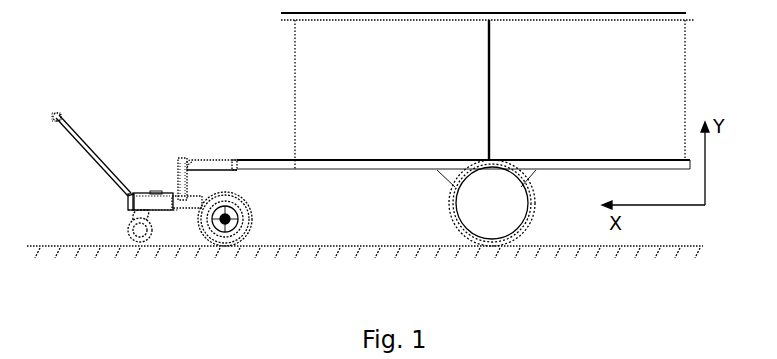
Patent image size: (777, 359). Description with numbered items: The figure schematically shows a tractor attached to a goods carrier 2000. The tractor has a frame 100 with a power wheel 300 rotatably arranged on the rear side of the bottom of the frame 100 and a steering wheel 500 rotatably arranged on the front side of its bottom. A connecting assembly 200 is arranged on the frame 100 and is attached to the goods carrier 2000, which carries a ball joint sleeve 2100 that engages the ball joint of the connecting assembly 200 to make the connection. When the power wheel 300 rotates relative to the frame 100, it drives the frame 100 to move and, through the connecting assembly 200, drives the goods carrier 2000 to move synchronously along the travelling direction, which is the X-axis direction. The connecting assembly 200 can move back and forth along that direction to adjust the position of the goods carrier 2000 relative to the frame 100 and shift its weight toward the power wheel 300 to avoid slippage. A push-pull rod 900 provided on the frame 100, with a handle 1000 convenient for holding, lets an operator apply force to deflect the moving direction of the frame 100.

The frame 100 is at (128, 202).
The connecting assembly 200 is at (173, 160).
The power wheel 300 is at (212, 238).
The steering wheel 500 is at (131, 238).
The push-pull rod 900 is at (97, 162).
The handle 1000 is at (61, 115).
The goods carrier 2000 is at (358, 163).
The ball joint sleeve 2100 is at (192, 162).